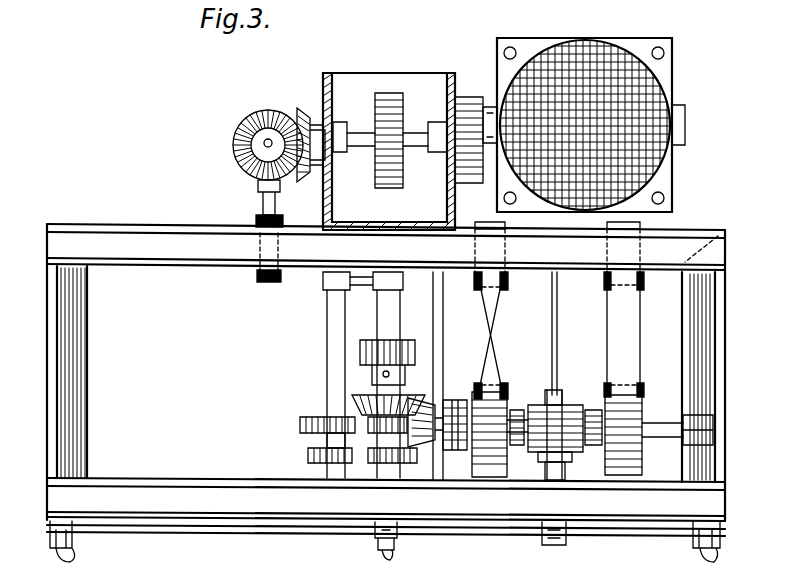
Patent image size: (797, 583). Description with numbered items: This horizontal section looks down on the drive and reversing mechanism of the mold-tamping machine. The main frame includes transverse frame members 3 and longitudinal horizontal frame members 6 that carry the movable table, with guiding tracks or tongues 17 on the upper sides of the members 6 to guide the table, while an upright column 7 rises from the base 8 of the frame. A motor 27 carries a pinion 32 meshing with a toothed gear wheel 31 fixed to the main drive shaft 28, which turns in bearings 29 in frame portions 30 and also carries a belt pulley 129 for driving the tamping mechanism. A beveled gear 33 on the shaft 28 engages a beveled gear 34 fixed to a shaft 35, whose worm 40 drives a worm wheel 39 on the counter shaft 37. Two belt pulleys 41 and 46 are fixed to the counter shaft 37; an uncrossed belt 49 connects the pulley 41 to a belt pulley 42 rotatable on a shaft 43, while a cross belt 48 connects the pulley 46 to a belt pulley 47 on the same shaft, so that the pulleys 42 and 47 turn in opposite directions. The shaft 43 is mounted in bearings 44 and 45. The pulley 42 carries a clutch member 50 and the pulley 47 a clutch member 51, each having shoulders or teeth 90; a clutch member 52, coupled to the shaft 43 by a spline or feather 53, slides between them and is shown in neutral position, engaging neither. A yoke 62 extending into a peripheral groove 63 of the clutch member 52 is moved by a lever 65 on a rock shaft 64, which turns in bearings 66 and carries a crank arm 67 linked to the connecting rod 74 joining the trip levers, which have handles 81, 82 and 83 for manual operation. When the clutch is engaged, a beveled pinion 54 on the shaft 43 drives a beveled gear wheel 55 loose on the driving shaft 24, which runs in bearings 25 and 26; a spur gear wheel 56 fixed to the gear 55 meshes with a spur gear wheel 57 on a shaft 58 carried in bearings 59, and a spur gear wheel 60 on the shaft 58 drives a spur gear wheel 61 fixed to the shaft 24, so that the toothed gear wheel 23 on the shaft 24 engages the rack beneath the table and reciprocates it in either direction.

The transverse frame members 3 is at (47, 378).
The longitudinal horizontal frame members 6 is at (176, 270).
The upright column 7 is at (378, 209).
The base 8 is at (350, 80).
The guiding tracks or tongues 17 is at (112, 240).
The toothed gear wheel 23 is at (402, 340).
The driving shaft 24 is at (400, 306).
The bearing 25 is at (403, 284).
The bearing 26 is at (402, 470).
The motor 27 is at (650, 86).
The main drive shaft 28 is at (418, 132).
The bearings 29 is at (343, 152).
The frame portions 30 is at (323, 210).
The toothed gear wheel 31 is at (466, 97).
The pinion 32 is at (488, 107).
The beveled gear 33 is at (300, 108).
The beveled gear 34 is at (256, 122).
The shaft 35 is at (265, 146).
The counter shaft 37 is at (710, 236).
The worm wheel 39 is at (258, 222).
The worm 40 is at (262, 210).
The belt pulley 41 is at (642, 228).
The belt pulley 42 is at (642, 458).
The shaft 43 is at (660, 423).
The bearing 44 is at (700, 445).
The bearing 45 is at (458, 452).
The belt pulley 46 is at (506, 282).
The belt pulley 47 is at (504, 392).
The cross belt 48 is at (497, 308).
The belt 49 is at (630, 316).
The clutch member 50 is at (578, 405).
The clutch member 51 is at (466, 450).
The clutch member 52 is at (565, 462).
The spline or feather 53 is at (522, 415).
The beveled pinion 54 is at (440, 405).
The beveled gear wheel 55 is at (420, 390).
The spur gear wheel 56 is at (327, 441).
The spur gear wheel 57 is at (300, 422).
The shaft 58 is at (328, 330).
The bearings 59 is at (330, 286).
The spur gear wheel 60 is at (308, 455).
The spur gear wheel 61 is at (388, 463).
The clutch operating member 62 is at (576, 400).
The peripheral groove 63 is at (542, 462).
The rock shaft 64 is at (558, 332).
The lever 65 is at (560, 390).
The bearings 66 is at (548, 480).
The crank arm 67 is at (542, 542).
The connecting rod 74 is at (268, 534).
The handle 81 is at (705, 556).
The handle 82 is at (384, 552).
The handle 83 is at (70, 556).
The shoulders or teeth 90 is at (517, 445).
The belt pulley 129 is at (394, 93).